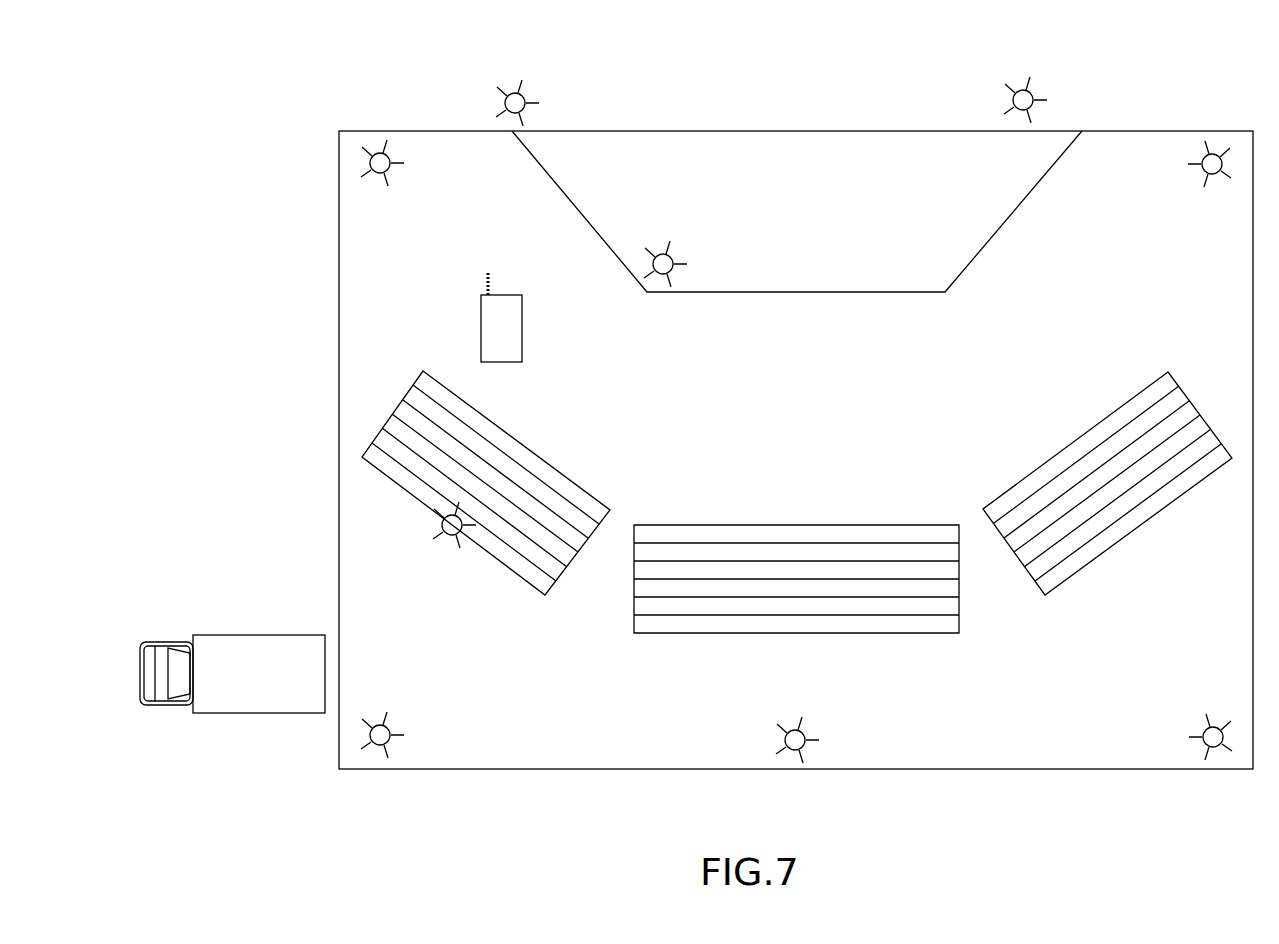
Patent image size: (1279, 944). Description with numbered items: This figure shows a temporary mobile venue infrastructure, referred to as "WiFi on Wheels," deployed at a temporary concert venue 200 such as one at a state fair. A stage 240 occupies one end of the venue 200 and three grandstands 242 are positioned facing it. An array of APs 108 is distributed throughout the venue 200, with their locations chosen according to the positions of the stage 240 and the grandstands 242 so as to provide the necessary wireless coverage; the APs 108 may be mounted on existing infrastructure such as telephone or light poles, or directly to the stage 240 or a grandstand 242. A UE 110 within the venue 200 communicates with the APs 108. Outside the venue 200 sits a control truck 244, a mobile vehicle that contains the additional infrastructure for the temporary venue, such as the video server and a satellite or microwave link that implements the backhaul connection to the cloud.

The access point (AP) 108 is at (1012, 91).
The user equipment (UE) 110 is at (525, 320).
The venue 200 is at (1027, 770).
The stage 240 is at (1008, 220).
The grandstands 242 is at (535, 448).
The control truck 244 is at (268, 714).